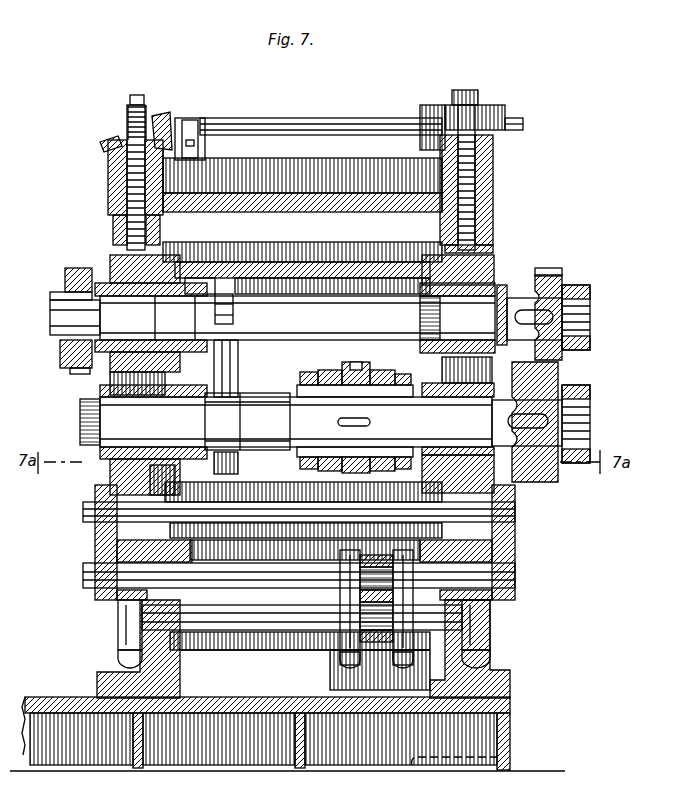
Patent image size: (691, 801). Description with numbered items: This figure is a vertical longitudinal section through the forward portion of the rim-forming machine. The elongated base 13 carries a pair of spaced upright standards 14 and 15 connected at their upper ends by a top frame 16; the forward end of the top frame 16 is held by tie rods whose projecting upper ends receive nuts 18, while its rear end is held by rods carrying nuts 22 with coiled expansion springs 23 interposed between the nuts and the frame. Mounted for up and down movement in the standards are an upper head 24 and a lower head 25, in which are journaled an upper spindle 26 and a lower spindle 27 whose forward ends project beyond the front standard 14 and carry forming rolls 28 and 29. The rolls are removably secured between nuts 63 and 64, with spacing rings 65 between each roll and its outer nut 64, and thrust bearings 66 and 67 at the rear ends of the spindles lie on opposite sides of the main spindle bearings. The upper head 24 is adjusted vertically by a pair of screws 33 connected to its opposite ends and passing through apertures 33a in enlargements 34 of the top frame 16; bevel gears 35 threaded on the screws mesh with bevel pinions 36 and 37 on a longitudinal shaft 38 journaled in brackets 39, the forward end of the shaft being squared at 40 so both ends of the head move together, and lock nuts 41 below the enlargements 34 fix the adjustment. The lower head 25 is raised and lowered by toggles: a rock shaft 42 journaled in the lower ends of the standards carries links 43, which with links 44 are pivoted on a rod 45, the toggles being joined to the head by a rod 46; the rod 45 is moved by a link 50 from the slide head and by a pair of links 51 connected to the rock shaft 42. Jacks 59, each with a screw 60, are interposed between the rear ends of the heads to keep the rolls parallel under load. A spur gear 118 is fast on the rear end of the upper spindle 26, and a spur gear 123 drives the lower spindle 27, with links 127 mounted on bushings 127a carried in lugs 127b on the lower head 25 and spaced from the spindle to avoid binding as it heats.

The base 13 is at (260, 752).
The front standard 14 is at (492, 668).
The rear standard 15 is at (112, 672).
The top frame 16 is at (363, 204).
The nuts 18 is at (468, 90).
The nuts 22 is at (141, 95).
The coiled expansion springs 23 is at (127, 115).
The upper head 24 is at (296, 268).
The lower head 25 is at (244, 472).
The upper spindle 26 is at (306, 318).
The lower spindle 27 is at (321, 422).
The forming roll 28 is at (548, 276).
The forming roll 29 is at (560, 380).
The screws 33 is at (108, 186).
The apertures 33a is at (113, 205).
The enlargements 34 is at (108, 168).
The bevel gears 35 is at (108, 142).
The bevel pinion 36 is at (440, 105).
The bevel pinion 37 is at (164, 114).
The shaft 38 is at (322, 118).
The brackets 39 is at (192, 120).
The squared end 40 is at (523, 124).
The lock nuts 41 is at (158, 241).
The rock shaft 42 is at (240, 687).
The links 43 is at (128, 612).
The links 44 is at (96, 549).
The rod 45 is at (515, 569).
The rod 46 is at (505, 508).
The link 50 is at (378, 640).
The links 51 is at (350, 578).
The jacks 59 is at (238, 373).
The screw 60 is at (235, 311).
The nuts 63 is at (505, 286).
The nuts 64 is at (590, 292).
The spacing rings 65 is at (562, 270).
The thrust bearing 66 is at (100, 283).
The thrust bearing 67 is at (192, 274).
The spur gear 118 is at (75, 360).
The spur gear 123 is at (355, 372).
The links 127 is at (302, 373).
The bushings 127a is at (327, 371).
The lugs 127b is at (382, 371).